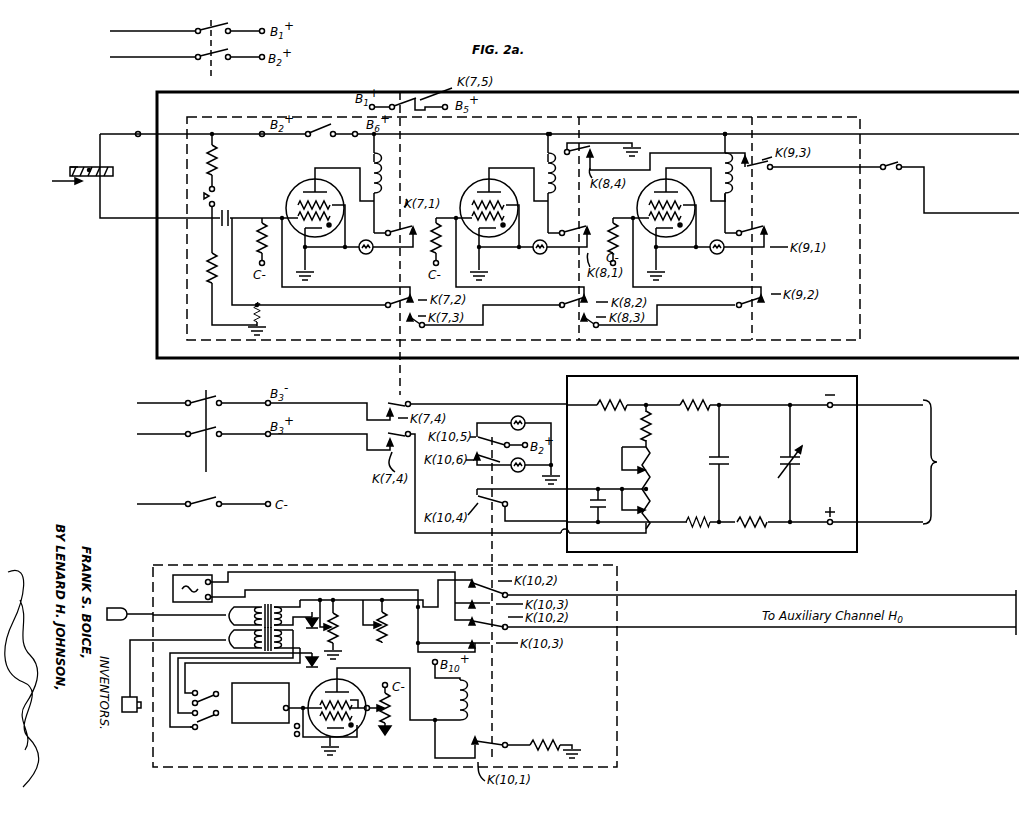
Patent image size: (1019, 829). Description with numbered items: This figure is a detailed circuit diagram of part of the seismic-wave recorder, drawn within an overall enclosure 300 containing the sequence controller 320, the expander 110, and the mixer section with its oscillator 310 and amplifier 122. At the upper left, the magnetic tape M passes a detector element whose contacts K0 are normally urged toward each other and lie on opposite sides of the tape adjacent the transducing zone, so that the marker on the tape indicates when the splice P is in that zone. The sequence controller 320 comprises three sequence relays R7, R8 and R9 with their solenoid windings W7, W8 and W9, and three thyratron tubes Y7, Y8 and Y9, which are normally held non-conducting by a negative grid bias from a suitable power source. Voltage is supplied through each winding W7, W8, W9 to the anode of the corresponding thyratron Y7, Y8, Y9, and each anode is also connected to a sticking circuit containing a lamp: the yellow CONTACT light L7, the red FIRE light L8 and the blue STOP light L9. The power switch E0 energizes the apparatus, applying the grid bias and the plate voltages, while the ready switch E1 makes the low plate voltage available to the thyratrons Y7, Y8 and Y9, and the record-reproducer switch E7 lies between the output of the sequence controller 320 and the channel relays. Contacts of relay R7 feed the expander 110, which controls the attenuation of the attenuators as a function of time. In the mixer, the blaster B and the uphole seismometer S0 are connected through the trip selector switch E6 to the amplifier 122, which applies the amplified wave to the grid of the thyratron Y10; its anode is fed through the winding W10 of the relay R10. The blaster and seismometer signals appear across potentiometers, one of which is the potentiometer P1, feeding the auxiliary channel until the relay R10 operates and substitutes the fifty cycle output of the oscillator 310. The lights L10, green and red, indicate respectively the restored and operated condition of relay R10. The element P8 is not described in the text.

The control circuit unit 300 is at (958, 90).
The sequence controller 320 is at (860, 315).
The expander 110 is at (862, 392).
The oscillator 310 is at (197, 575).
The amplifier 122 is at (262, 724).
The power switch E0 is at (206, 70).
The ready switch E1 is at (330, 122).
The record-reproducer switch E7 is at (872, 183).
The trip selector switch E6 is at (204, 737).
The detector contacts K0 is at (112, 184).
The magnetic tape M is at (76, 166).
The splice P is at (89, 167).
The first sequence thyratron Y7 is at (314, 201).
The second sequence thyratron Y8 is at (488, 200).
The third sequence thyratron Y9 is at (633, 206).
The thyratron Y10 is at (368, 725).
The solenoid winding W7 is at (386, 186).
The solenoid winding W8 is at (552, 195).
The solenoid winding W9 is at (735, 185).
The winding W10 is at (455, 728).
The first sequence relay R7 is at (372, 172).
The second sequence relay R8 is at (540, 168).
The third sequence relay R9 is at (734, 211).
The relay R10 is at (447, 684).
The yellow CONTACT light L7 is at (377, 267).
The red FIRE light L8 is at (554, 267).
The blue STOP light L9 is at (730, 267).
The indicator lights L10 is at (535, 497).
The potentiometer P1 is at (338, 628).
The potentiometer P8 is at (390, 620).
The uphole seismometer S0 is at (130, 610).
The blaster B is at (130, 712).